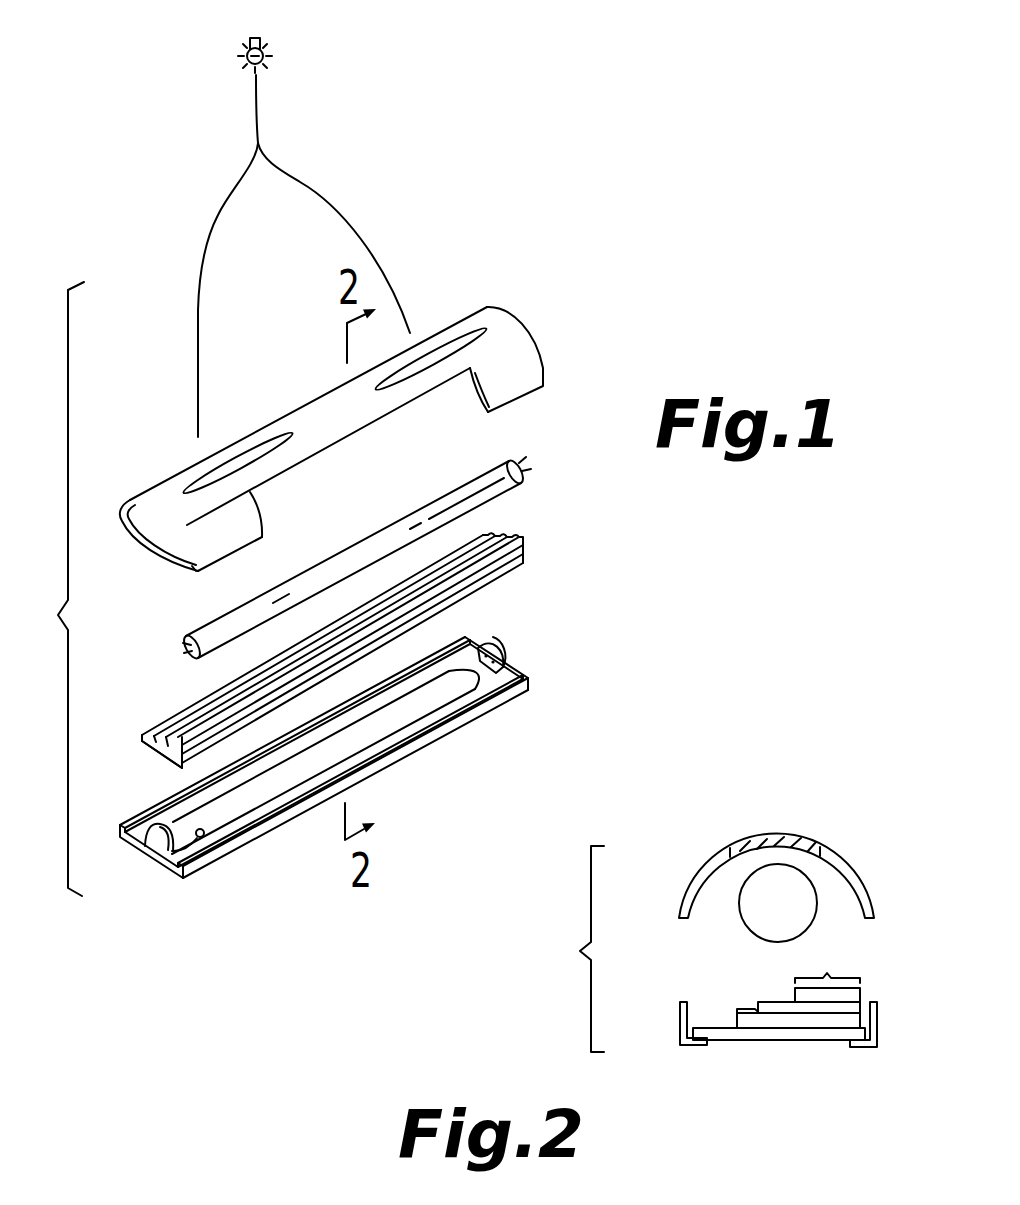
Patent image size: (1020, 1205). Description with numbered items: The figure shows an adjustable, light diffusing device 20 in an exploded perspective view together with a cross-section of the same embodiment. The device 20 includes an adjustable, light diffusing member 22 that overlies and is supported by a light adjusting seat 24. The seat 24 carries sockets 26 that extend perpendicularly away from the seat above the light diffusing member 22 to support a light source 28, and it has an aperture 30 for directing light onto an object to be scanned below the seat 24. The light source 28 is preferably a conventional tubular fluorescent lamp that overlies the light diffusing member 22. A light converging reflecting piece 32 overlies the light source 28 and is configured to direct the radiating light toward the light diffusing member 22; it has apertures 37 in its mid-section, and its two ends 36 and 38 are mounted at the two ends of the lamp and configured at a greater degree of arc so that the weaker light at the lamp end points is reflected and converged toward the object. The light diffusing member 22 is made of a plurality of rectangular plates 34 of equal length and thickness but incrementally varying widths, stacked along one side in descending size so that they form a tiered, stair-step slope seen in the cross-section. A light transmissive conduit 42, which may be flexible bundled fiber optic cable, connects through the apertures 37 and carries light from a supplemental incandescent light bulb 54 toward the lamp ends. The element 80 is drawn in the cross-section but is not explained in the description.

In FIG. 1, the lamp assembly 20 is at (50, 589).
In FIG. 2, the lamp assembly 20 is at (572, 949).
In FIG. 1, the stacked light guide plates 22 is at (533, 551).
In FIG. 1, the base channel 24 is at (525, 674).
In FIG. 2, the base channel 24 is at (683, 1027).
In FIG. 1, the lamp holder 26 is at (507, 637).
In FIG. 1, the fluorescent lamp tube 28 is at (507, 483).
In FIG. 2, the fluorescent lamp tube 28 is at (750, 932).
In FIG. 1, the lamp socket and mounting hole 30 is at (203, 838).
In FIG. 1, the arcuate cover 32 is at (306, 398).
In FIG. 2, the arcuate cover 32 is at (687, 890).
In FIG. 1, the light guide plate 34 is at (143, 738).
In FIG. 2, the light guide plate 34 is at (777, 1007).
In FIG. 1, the cover end skirt 36 is at (527, 369).
In FIG. 1, the cover slot 37 is at (492, 328).
In FIG. 1, the cover end skirt 38 is at (207, 545).
In FIG. 1, the light distribution curve 42 is at (372, 236).
In FIG. 1, the light source symbol 54 is at (265, 46).
In FIG. 2, the spacer / adhesive tab 80 is at (752, 1010).